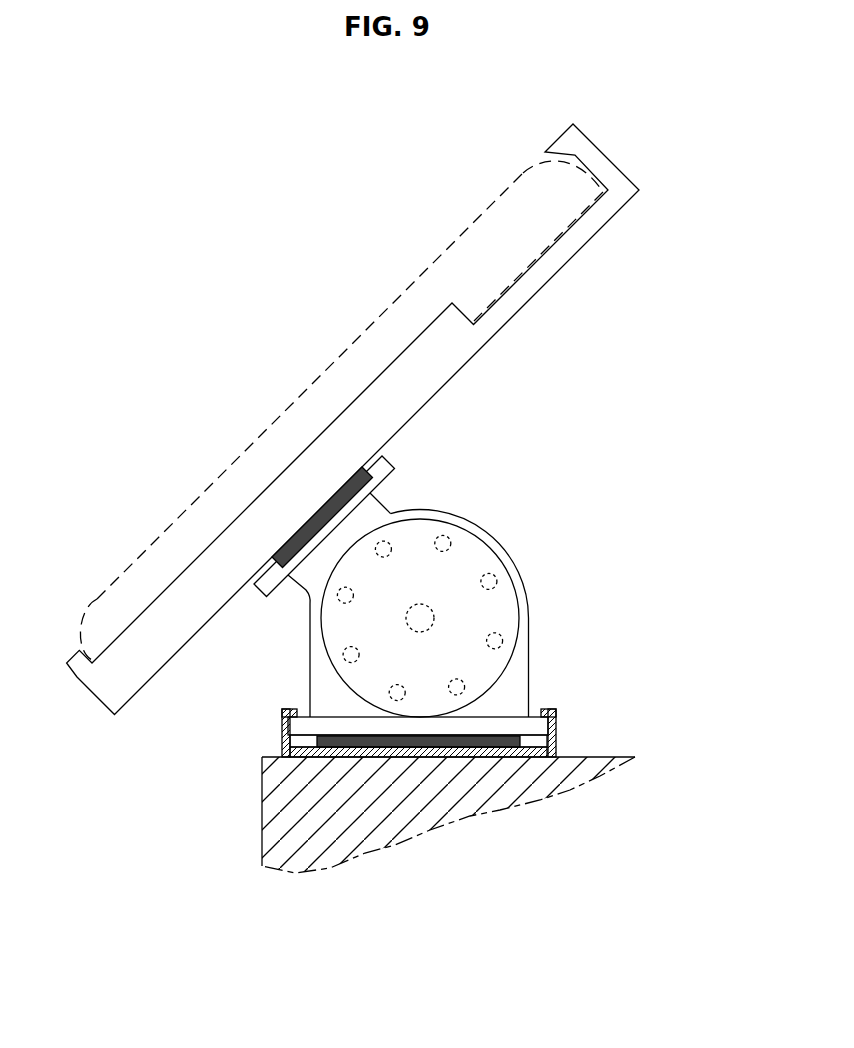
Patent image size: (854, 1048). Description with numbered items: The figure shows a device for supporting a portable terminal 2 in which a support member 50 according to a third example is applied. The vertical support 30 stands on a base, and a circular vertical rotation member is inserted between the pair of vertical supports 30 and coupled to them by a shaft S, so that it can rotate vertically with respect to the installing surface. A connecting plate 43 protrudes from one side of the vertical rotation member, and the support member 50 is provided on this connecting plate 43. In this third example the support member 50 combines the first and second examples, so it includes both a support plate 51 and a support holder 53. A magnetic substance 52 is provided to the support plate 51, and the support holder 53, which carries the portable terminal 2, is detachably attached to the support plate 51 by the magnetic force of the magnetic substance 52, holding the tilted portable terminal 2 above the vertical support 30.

The portable terminal 2 is at (341, 419).
The support holder 53 is at (195, 573).
The support member 50 is at (445, 485).
The support plate 51 is at (390, 456).
The magnetic substance 52 is at (360, 488).
The connecting plate 43 is at (302, 587).
The vertical support 30 is at (503, 633).
The shaft S is at (418, 616).